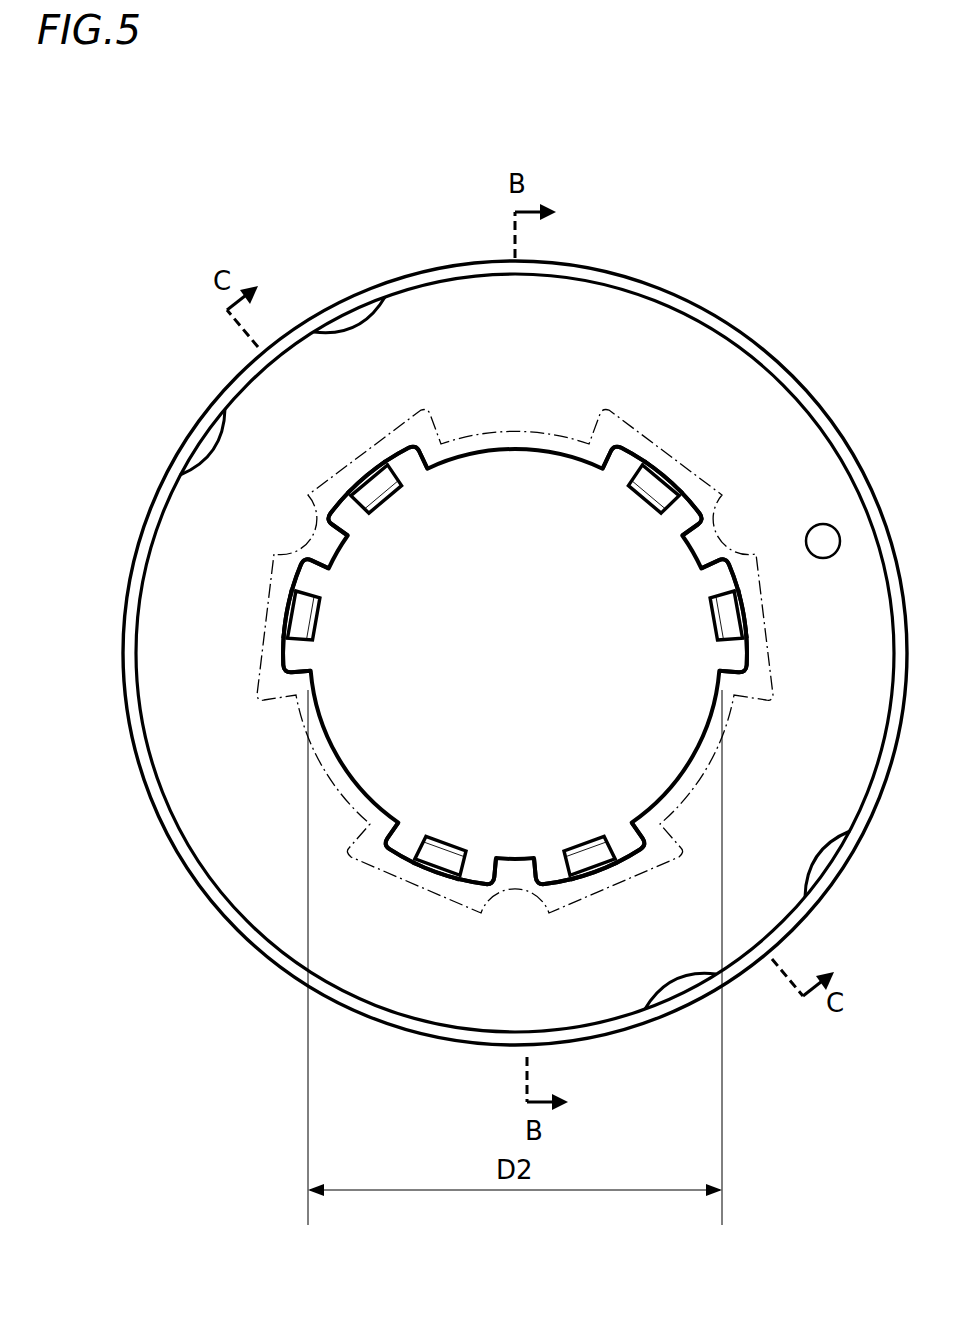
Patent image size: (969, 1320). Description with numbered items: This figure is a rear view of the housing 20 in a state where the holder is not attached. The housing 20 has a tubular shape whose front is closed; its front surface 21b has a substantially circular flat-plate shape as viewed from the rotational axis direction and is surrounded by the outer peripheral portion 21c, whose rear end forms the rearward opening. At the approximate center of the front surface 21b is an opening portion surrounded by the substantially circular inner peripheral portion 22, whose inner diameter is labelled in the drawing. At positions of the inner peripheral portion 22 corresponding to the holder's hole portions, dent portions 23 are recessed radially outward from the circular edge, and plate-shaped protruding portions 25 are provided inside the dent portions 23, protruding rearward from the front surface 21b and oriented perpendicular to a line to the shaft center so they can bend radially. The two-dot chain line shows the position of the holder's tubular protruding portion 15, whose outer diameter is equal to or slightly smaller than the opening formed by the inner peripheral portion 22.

The housing 20 is at (165, 167).
The front surface 21b is at (273, 486).
The outer peripheral portion 21c is at (440, 276).
The inner peripheral portion 22 is at (483, 452).
The dent portion 23 is at (402, 455).
The protruding portion 25 is at (365, 490).
The protruding portion 15 is at (581, 420).